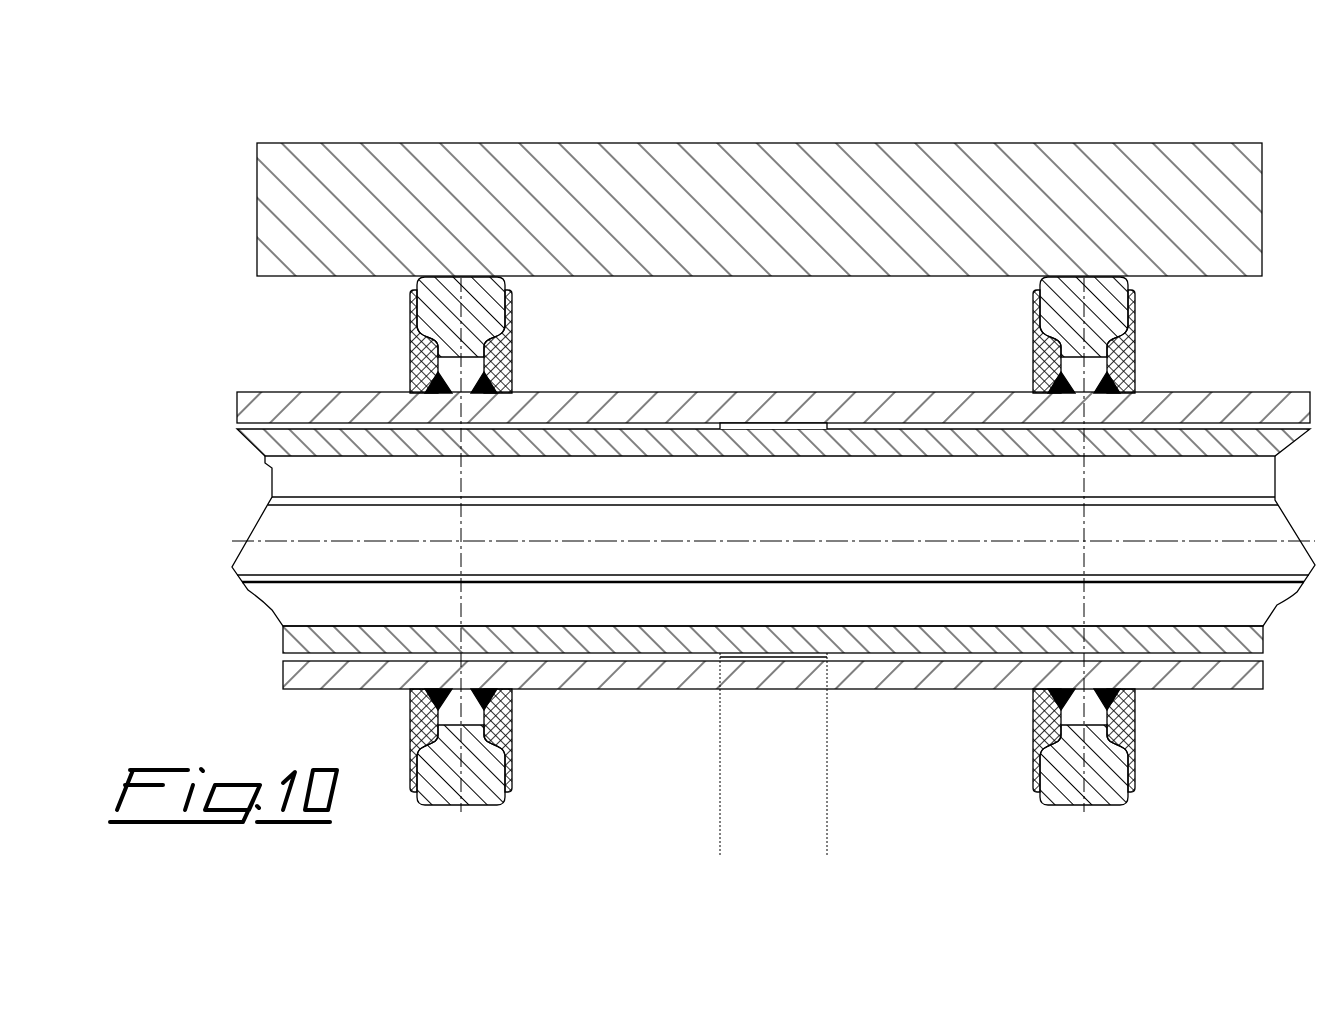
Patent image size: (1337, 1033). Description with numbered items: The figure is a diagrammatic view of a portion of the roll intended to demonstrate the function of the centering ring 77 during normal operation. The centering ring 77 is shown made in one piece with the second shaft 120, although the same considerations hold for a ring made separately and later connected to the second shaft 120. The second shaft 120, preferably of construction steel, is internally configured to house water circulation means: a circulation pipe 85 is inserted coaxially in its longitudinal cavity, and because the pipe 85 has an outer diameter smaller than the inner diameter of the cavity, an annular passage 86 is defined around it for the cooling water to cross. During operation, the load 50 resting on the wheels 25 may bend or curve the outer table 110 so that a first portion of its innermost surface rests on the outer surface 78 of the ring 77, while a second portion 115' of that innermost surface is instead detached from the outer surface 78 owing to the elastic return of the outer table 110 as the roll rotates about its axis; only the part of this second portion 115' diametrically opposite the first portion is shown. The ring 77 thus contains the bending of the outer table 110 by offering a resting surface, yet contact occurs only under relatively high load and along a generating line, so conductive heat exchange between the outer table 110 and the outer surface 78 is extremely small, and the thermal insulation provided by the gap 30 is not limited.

The load 50 is at (787, 173).
The wheels 25 is at (433, 313).
The outer table 110 is at (567, 410).
The gap 30 is at (933, 428).
The centering ring 77 is at (763, 430).
The annular passage 86 is at (1200, 475).
The circulation pipe 85 is at (1173, 575).
The second shaft 120 is at (590, 637).
The outer surface of the ring 78 is at (745, 657).
The second portion of the innermost surface 115' is at (773, 755).